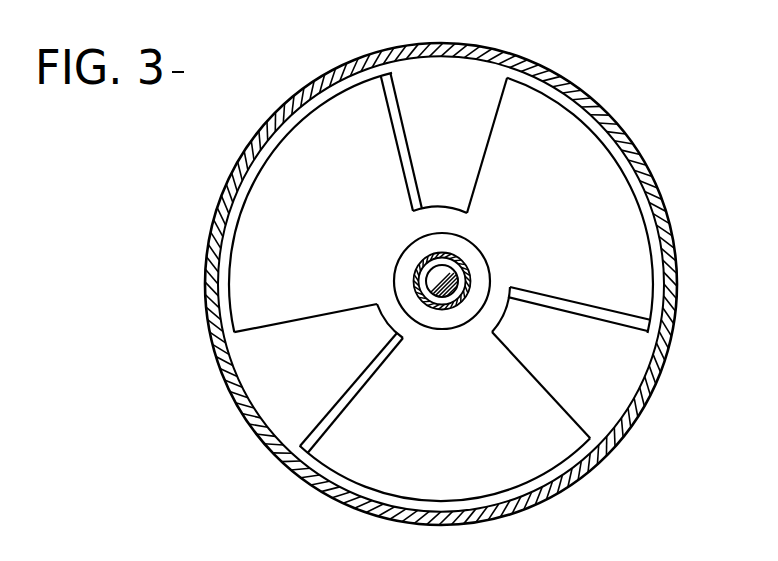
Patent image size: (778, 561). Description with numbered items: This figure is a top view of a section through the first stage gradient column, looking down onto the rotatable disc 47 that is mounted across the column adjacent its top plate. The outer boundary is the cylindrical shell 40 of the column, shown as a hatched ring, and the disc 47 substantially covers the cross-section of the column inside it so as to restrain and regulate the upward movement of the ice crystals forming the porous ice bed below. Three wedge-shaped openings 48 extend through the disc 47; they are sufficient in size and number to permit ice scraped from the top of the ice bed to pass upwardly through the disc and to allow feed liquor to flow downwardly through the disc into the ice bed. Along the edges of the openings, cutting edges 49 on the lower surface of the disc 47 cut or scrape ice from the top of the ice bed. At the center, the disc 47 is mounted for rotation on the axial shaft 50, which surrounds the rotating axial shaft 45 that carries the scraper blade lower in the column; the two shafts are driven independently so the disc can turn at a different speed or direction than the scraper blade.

The cylindrical shell 40 is at (662, 201).
The rotating axial shaft 45 is at (468, 284).
The rotatable disc 47 is at (313, 126).
The openings 48 is at (484, 92).
The cutting edges 49 is at (638, 330).
The axial shaft 50 is at (459, 262).